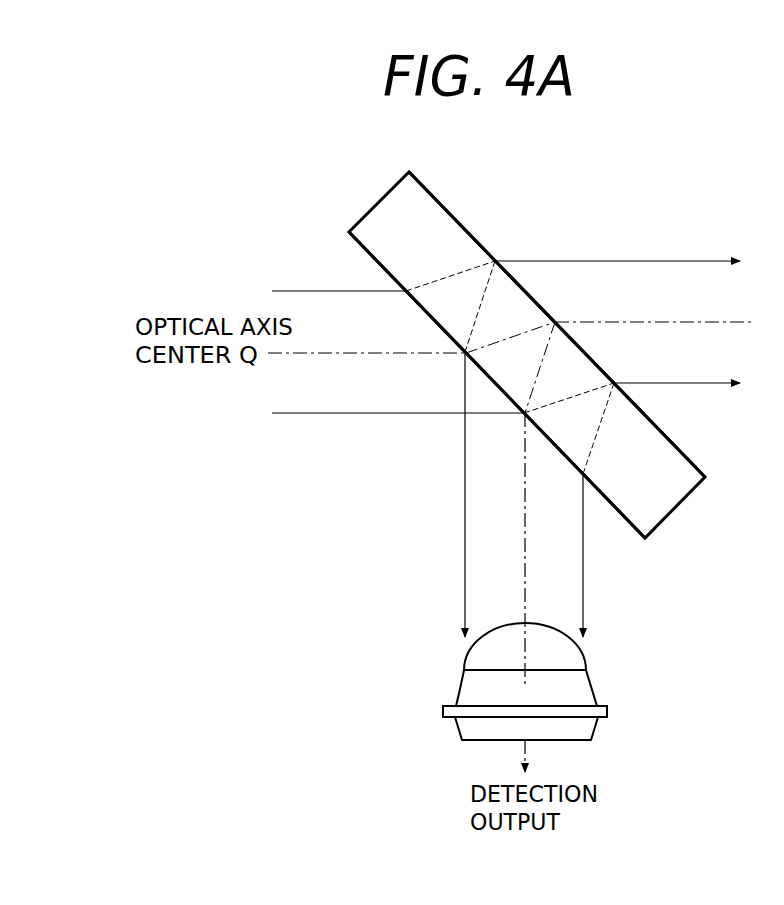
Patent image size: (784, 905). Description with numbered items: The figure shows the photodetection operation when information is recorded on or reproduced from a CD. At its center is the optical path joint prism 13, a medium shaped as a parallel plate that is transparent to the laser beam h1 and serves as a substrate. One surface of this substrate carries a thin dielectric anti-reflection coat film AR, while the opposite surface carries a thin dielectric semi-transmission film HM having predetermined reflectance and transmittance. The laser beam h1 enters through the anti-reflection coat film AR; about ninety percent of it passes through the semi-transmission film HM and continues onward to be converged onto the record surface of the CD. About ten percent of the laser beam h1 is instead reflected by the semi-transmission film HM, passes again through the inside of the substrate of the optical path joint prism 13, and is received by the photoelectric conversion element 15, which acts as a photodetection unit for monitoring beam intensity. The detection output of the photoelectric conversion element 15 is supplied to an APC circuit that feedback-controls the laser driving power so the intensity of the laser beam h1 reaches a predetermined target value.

The optical path joint prism 13 is at (658, 500).
The photoelectric conversion element 15 is at (582, 688).
The semi-transmission film HM is at (455, 219).
The anti-reflection coat film AR is at (352, 242).
The laser beam h1 is at (318, 400).